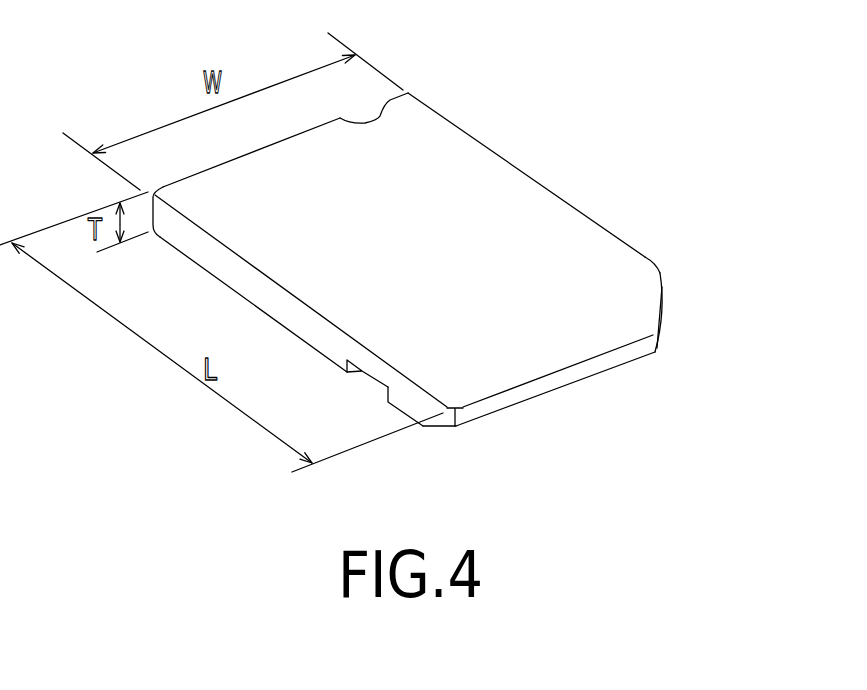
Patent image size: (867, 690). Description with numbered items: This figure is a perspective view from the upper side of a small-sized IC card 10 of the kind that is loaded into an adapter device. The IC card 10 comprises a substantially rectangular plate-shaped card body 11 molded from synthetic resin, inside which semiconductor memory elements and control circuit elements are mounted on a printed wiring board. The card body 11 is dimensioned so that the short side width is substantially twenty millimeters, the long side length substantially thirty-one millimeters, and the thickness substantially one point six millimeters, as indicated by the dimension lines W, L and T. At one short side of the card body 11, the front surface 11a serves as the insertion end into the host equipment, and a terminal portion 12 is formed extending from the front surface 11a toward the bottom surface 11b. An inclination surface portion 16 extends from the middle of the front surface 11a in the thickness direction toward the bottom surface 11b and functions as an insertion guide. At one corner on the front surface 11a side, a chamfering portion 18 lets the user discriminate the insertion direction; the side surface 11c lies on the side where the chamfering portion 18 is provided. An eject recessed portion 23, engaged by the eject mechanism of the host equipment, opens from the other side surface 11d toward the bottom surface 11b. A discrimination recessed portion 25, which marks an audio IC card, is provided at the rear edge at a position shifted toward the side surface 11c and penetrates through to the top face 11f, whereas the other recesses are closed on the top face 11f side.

The IC card 10 is at (515, 50).
The card body 11 is at (437, 278).
The front surface 11a is at (573, 377).
The bottom surface 11b is at (248, 303).
The side surface 11c is at (600, 226).
The other side surface 11d is at (315, 350).
The top face 11f is at (415, 140).
The terminal portion 12 is at (447, 433).
The inclination surface portion 16 is at (432, 432).
The chamfering portion 18 is at (663, 298).
The eject recessed portion 23 is at (385, 392).
The discrimination recessed portion 25 is at (372, 114).